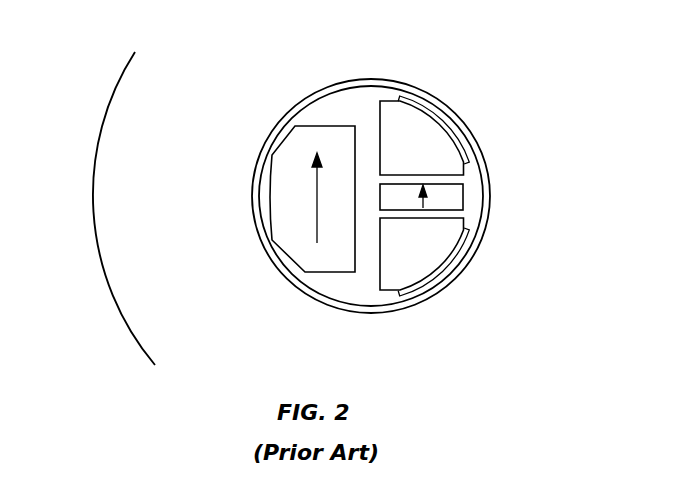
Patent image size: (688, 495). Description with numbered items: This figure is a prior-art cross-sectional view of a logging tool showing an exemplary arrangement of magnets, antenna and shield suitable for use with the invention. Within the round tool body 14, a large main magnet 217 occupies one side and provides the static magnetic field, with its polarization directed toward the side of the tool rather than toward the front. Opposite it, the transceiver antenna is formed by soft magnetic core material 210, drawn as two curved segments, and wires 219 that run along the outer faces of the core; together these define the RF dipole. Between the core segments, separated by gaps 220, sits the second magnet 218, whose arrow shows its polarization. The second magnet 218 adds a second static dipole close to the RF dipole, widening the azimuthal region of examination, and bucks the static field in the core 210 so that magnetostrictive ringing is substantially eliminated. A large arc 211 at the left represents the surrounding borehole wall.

The housing / tube 14 is at (350, 307).
The core material 210 is at (398, 117).
The outer wall / arc 211 is at (121, 325).
The main magnet 217 is at (295, 250).
The second magnet 218 is at (465, 195).
The wires 219 is at (460, 140).
The gap between magnets 220 is at (467, 178).